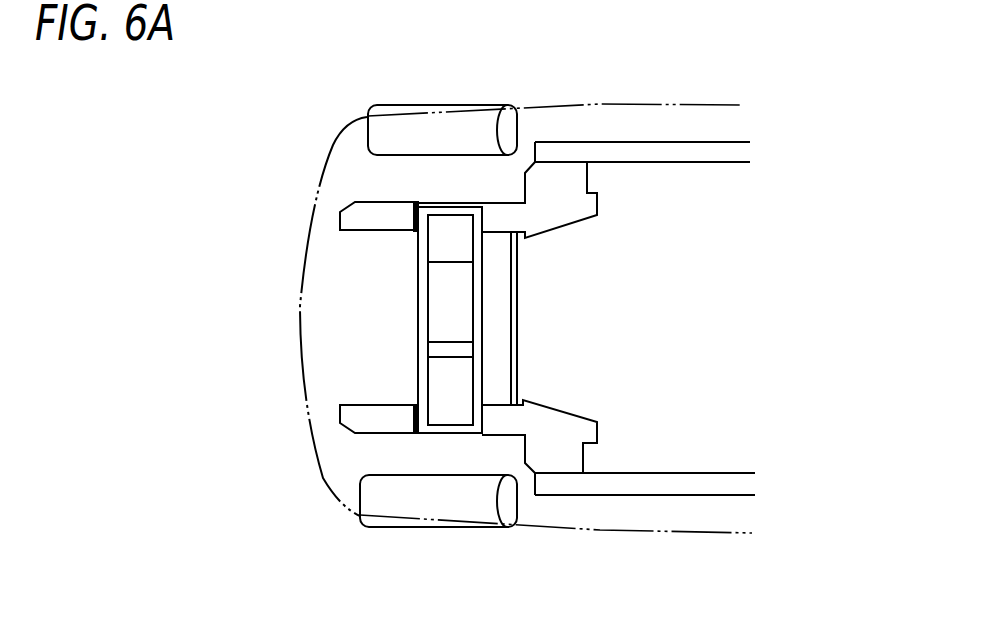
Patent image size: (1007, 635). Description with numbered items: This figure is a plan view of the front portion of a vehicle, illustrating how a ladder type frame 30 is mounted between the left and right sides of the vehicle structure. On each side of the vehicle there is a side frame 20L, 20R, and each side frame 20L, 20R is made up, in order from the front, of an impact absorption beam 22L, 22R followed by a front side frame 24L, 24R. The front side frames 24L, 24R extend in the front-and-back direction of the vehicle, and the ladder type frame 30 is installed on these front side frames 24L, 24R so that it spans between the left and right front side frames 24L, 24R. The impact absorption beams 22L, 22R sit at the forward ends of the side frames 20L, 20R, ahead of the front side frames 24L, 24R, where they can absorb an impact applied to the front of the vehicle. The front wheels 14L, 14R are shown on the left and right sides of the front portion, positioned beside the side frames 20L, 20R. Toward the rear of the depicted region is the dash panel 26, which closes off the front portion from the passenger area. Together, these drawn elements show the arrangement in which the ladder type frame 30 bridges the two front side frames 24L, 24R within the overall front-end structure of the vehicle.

The front wheel 14R is at (420, 105).
The front wheel 14L is at (417, 527).
The side frame 20R is at (660, 148).
The side frame 20L is at (660, 495).
The impact absorption beam 22R is at (373, 200).
The impact absorption beam 22L is at (368, 435).
The front side frame 24R is at (498, 200).
The front side frame 24L is at (480, 437).
The dash panel 26 is at (514, 342).
The ladder type frame 30 is at (416, 325).